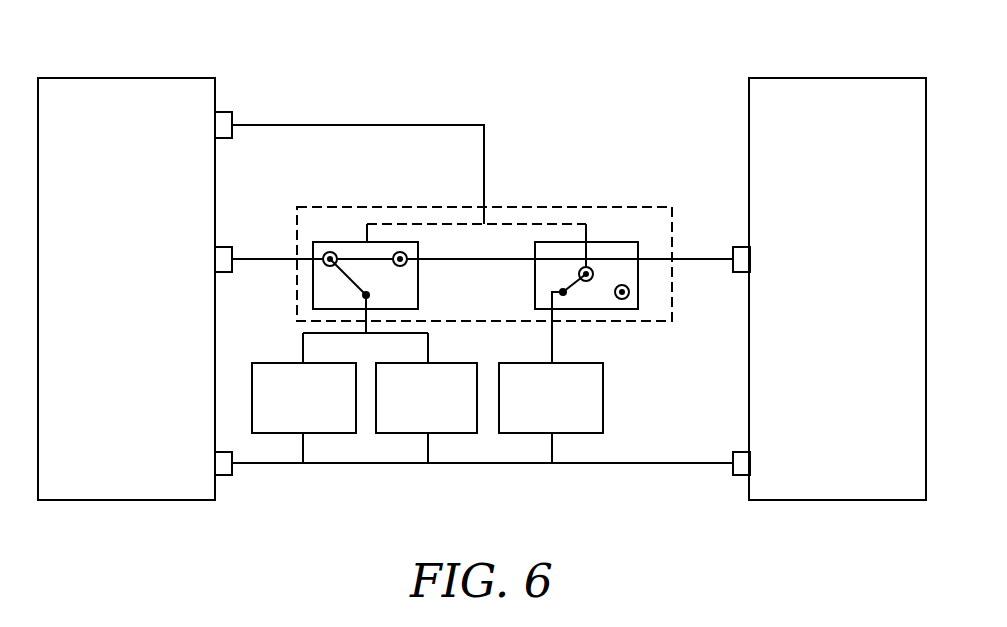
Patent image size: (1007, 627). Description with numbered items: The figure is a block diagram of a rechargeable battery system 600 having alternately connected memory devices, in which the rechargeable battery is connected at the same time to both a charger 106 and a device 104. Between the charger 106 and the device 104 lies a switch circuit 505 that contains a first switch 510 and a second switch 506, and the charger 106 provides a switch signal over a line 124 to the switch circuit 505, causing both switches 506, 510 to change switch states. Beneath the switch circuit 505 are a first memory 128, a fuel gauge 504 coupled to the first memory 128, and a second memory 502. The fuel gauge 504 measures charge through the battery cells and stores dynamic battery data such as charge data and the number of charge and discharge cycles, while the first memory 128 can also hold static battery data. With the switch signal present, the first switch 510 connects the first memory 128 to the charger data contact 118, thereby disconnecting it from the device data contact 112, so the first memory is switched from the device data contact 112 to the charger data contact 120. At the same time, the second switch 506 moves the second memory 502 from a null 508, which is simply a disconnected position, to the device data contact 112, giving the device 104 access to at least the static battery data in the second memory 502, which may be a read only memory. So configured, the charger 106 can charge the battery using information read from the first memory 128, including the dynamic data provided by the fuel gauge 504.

The device 104 is at (838, 78).
The charger 106 is at (100, 78).
The device data contact 112 is at (733, 251).
The charger data contact 118 is at (232, 118).
The charger data contact 120 is at (232, 253).
The line 124 is at (466, 124).
The first memory 128 is at (322, 363).
The second memory 502 is at (583, 363).
The fuel gauge 504 is at (458, 363).
The switch circuit 505 is at (578, 207).
The second switch 506 is at (610, 242).
The null 508 is at (629, 292).
The first switch 510 is at (418, 289).
The rechargeable battery system 600 is at (864, 548).